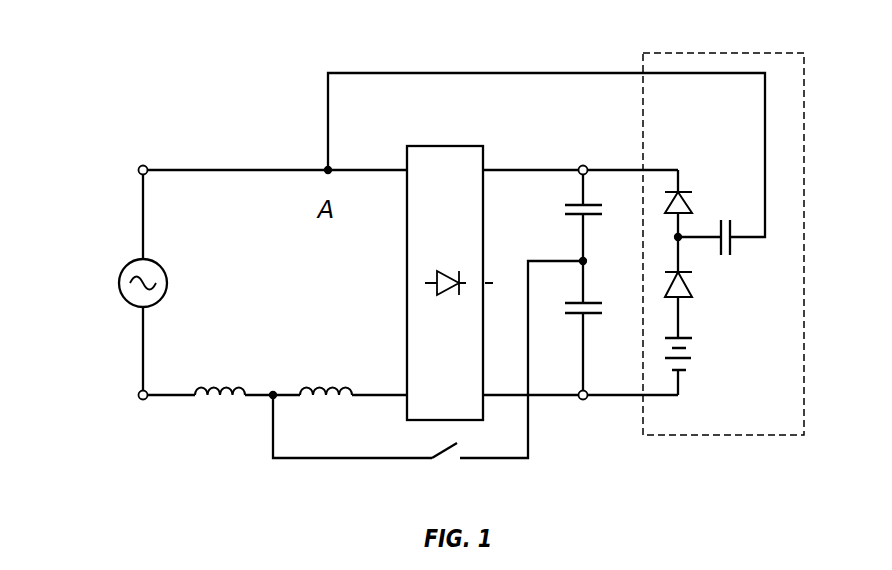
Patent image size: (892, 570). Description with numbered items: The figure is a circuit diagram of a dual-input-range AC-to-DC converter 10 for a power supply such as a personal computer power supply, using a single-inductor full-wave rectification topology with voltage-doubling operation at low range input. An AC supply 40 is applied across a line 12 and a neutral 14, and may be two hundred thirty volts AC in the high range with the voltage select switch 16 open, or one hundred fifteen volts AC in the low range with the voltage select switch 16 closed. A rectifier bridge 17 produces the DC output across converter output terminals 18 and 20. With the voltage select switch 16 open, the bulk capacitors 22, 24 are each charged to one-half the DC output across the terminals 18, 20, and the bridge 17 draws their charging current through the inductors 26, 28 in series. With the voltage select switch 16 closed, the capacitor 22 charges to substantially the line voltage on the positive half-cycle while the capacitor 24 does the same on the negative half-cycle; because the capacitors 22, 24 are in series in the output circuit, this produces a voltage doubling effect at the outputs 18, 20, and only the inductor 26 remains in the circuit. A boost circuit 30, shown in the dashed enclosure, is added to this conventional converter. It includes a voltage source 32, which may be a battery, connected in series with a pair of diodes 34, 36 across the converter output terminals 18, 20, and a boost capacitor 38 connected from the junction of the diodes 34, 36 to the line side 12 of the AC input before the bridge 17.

The dual-input-range AC-to-DC converter 10 is at (312, 63).
The line 12 is at (139, 166).
The neutral 14 is at (140, 400).
The voltage select switch 16 is at (452, 464).
The rectifier bridge 17 is at (443, 145).
The converter output terminal 18 is at (580, 166).
The converter output terminal 20 is at (586, 400).
The bulk capacitor 22 is at (563, 208).
The bulk capacitor 24 is at (563, 308).
The inductor 26 is at (219, 383).
The inductor 28 is at (325, 381).
The boost circuit 30 is at (723, 53).
The voltage source 32 is at (692, 349).
The diode 34 is at (688, 284).
The diode 36 is at (688, 197).
The boost capacitor 38 is at (733, 243).
The AC supply 40 is at (131, 262).